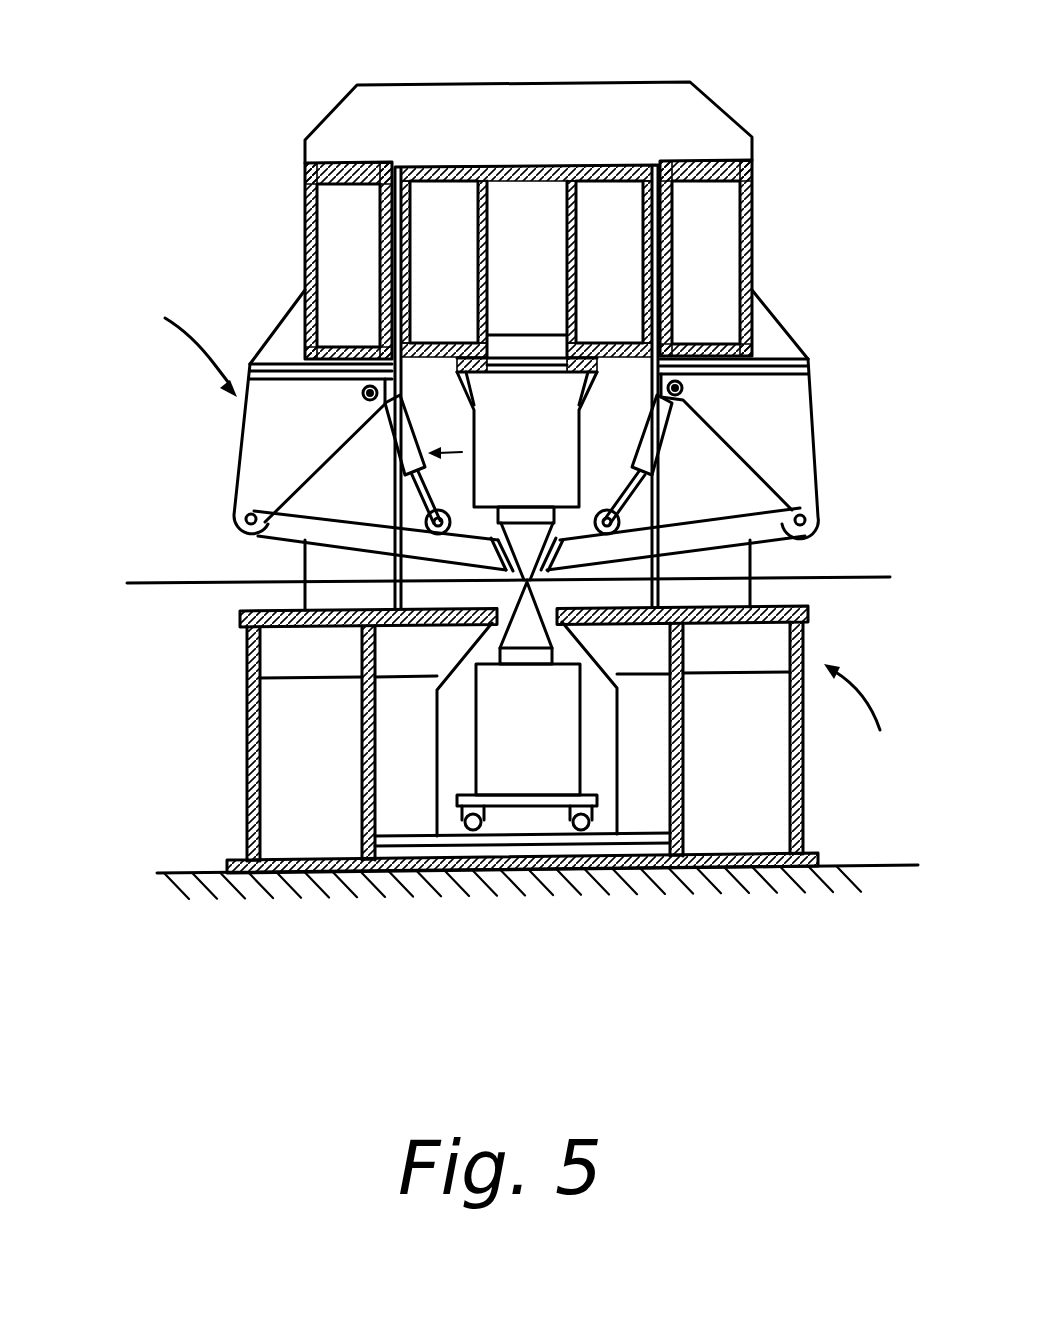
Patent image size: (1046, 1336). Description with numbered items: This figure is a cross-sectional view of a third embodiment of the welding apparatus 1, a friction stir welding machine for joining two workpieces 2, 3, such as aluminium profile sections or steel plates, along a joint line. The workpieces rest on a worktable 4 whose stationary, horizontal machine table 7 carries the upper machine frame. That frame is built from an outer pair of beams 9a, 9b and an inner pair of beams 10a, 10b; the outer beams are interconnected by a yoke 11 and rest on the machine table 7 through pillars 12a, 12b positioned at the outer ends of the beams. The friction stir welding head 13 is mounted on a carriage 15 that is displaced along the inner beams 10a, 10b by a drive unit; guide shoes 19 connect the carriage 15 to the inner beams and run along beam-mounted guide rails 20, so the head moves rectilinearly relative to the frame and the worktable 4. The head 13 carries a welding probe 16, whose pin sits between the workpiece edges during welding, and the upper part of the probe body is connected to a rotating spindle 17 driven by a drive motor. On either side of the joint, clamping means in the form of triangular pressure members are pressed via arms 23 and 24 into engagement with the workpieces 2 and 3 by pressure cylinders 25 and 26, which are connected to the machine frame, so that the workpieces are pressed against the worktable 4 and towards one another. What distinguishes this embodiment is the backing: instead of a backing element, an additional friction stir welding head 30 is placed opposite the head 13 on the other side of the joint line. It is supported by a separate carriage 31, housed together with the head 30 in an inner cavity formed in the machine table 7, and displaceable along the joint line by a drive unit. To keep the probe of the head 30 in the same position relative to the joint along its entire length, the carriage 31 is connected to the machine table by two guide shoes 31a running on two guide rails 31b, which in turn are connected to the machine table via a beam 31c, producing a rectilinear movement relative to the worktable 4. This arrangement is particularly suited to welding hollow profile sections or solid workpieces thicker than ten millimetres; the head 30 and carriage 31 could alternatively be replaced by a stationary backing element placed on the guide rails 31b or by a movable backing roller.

The welding apparatus 1 is at (190, 348).
The workpiece 2 is at (836, 578).
The workpiece 3 is at (152, 583).
The worktable 4 is at (572, 741).
The machine table 7 is at (813, 610).
The outer beam 9a is at (708, 253).
The outer beam 9b is at (340, 215).
The inner beam 10a is at (617, 247).
The inner beam 10b is at (423, 210).
The yoke 11 is at (667, 104).
The pillar 12a is at (703, 475).
The pillar 12b is at (347, 483).
The friction stir welding head 13 is at (395, 458).
The carriage 15 is at (538, 353).
The welding probe 16 is at (553, 536).
The rotating spindle 17 is at (562, 456).
The guide shoe 19 is at (445, 340).
The guide rail 20 is at (453, 337).
The arm 23 is at (780, 542).
The arm 24 is at (327, 533).
The pressure cylinder 25 is at (660, 403).
The pressure cylinder 26 is at (362, 428).
The additional friction stir welding head 30 is at (567, 799).
The separate carriage 31 is at (527, 622).
The guide shoe 31a is at (547, 800).
The guide rail 31b is at (468, 830).
The beam 31c is at (593, 858).